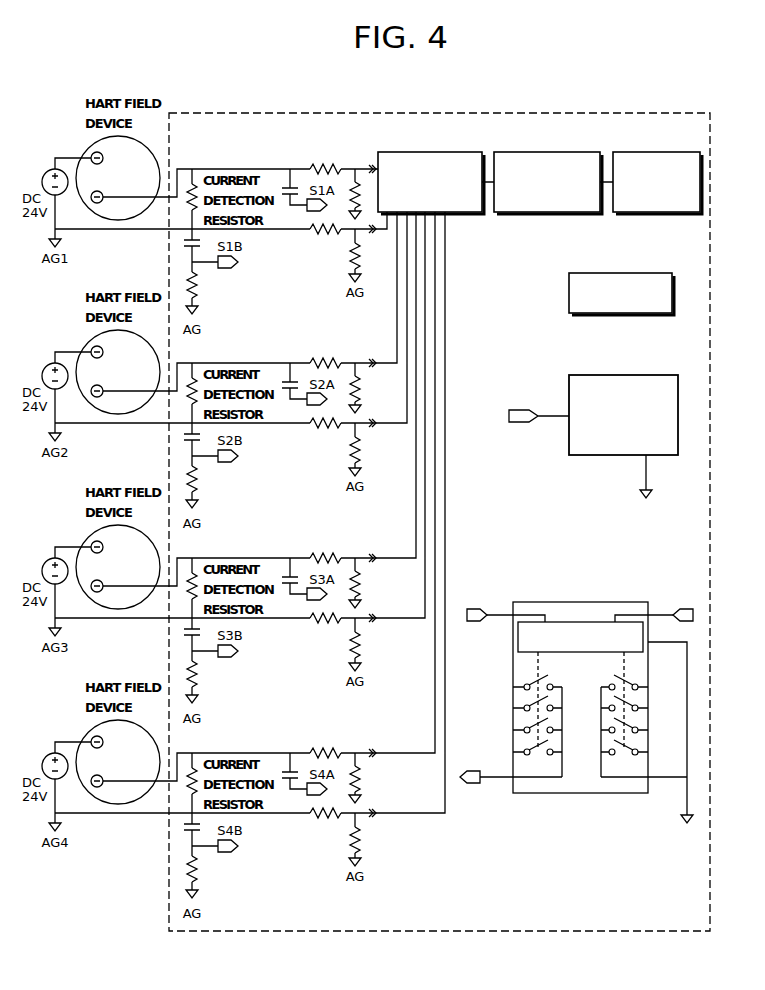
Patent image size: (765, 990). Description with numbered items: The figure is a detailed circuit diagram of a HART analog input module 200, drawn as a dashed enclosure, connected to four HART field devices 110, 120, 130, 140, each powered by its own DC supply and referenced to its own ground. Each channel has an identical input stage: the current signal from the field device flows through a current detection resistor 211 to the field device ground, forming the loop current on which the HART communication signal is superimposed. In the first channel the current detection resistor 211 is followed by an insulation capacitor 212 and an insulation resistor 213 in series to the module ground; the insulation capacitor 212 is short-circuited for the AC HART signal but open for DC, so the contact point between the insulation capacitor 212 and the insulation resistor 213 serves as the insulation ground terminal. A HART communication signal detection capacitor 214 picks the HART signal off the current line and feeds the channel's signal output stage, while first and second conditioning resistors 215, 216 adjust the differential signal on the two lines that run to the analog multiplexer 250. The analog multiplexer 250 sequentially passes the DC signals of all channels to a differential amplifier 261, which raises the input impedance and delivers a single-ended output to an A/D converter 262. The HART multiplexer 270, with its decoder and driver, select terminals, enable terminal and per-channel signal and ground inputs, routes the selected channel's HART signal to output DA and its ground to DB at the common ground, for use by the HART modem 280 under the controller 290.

The HART field device 110 is at (92, 150).
The HART field device 120 is at (92, 344).
The HART field device 130 is at (92, 538).
The HART field device 140 is at (92, 733).
The HART analog input module 200 is at (662, 113).
The current detection resistor 211 is at (194, 176).
The insulation capacitor 212 is at (182, 243).
The insulation resistor 213 is at (200, 285).
The HART communication signal detection capacitor 214 is at (284, 184).
The first conditioning resistor 215 is at (320, 165).
The second conditioning resistor 216 is at (347, 240).
The analog multiplexer 250 is at (450, 152).
The differential amplifier 261 is at (568, 152).
The A/D converter 262 is at (660, 152).
The HART multiplexer 270 is at (607, 602).
The HART modem 280 is at (650, 375).
The controller 290 is at (647, 273).